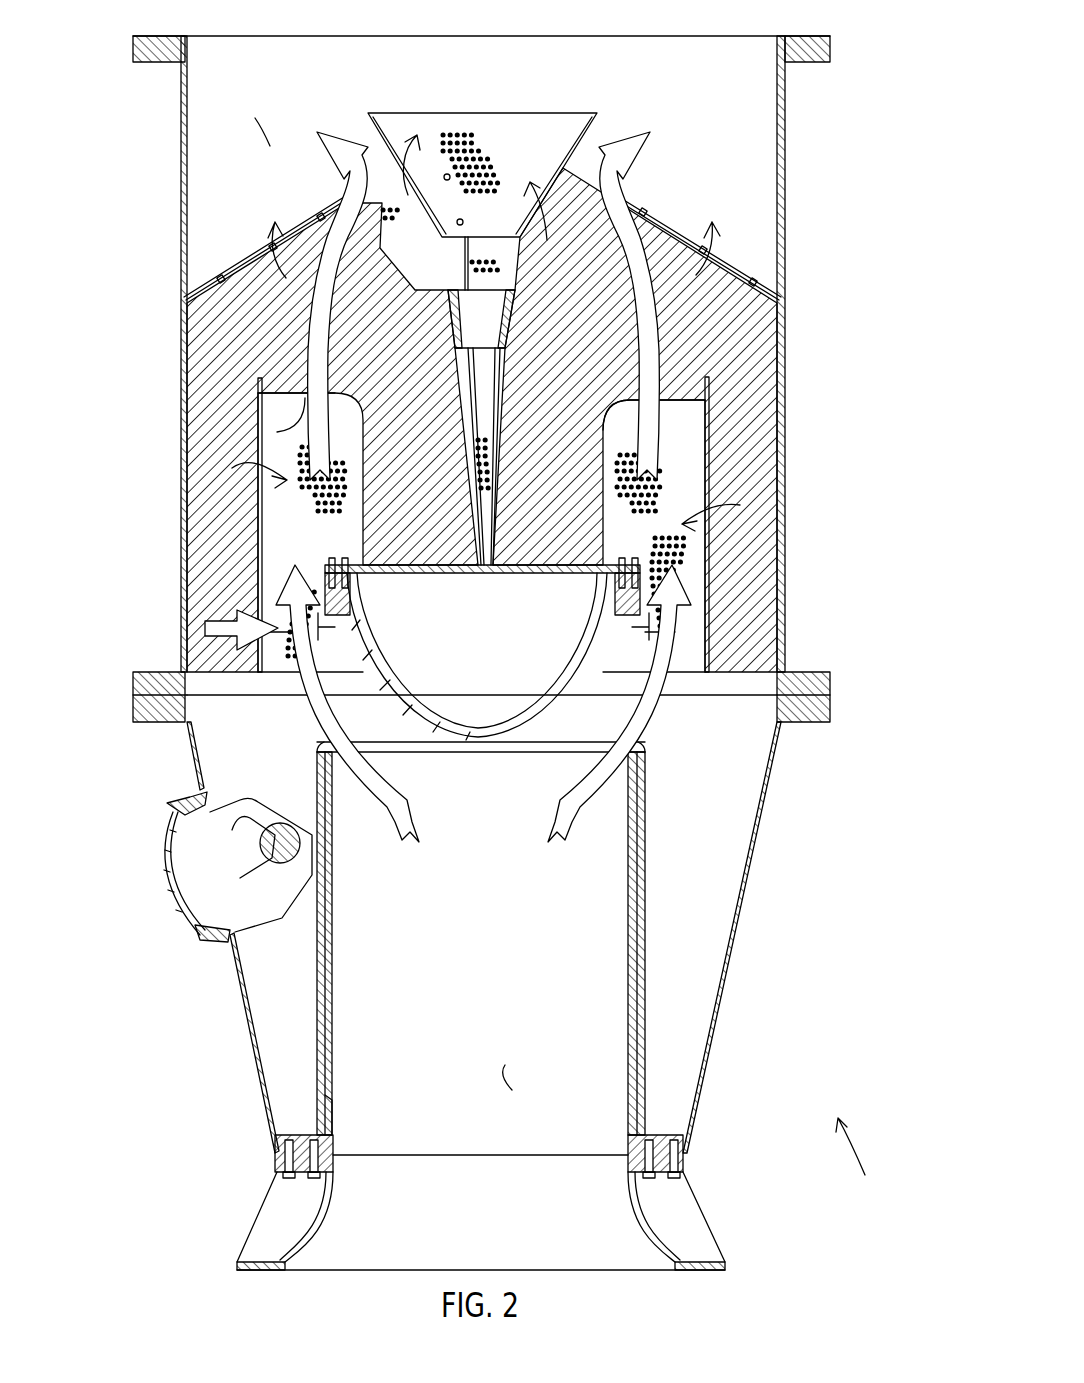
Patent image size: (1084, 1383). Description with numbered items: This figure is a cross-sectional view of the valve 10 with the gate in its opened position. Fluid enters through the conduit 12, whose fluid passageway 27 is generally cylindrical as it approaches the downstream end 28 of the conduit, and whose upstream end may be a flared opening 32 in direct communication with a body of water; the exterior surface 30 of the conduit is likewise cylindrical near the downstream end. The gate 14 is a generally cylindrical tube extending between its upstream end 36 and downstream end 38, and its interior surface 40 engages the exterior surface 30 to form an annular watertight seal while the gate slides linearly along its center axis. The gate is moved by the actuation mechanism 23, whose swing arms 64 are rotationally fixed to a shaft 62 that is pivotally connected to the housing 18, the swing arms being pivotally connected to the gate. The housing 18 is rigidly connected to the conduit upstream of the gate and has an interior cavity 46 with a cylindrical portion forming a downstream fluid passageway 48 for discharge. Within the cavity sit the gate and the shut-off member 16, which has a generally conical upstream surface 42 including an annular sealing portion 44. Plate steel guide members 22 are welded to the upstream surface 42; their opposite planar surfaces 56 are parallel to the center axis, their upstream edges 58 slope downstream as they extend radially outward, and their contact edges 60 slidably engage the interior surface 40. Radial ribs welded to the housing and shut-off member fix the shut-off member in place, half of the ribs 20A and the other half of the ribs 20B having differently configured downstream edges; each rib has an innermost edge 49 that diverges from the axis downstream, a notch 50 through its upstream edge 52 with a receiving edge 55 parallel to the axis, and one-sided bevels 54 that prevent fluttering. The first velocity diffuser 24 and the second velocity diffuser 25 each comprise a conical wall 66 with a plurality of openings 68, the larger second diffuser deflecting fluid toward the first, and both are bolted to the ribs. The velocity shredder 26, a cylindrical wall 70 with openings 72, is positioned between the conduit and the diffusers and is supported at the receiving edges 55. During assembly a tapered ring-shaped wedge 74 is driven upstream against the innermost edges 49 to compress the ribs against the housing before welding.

The valve 10 is at (858, 1157).
The conduit 12 is at (332, 1107).
The gate 14 is at (318, 972).
The shut-off member 16 is at (583, 790).
The housing 18 is at (185, 780).
The ribs 20A is at (352, 200).
The ribs 20B is at (225, 340).
The guide members 22 is at (300, 630).
The actuation mechanism 23 is at (243, 845).
The first velocity diffuser 24 is at (615, 130).
The second velocity diffuser 25 is at (262, 252).
The velocity shredder 26 is at (277, 500).
The fluid passageway 27 is at (505, 1065).
The downstream end 28 is at (567, 750).
The exterior surface 30 is at (325, 1100).
The flared opening 32 is at (612, 1242).
The upstream end 36 is at (643, 1097).
The downstream end 38 is at (345, 705).
The interior surface 40 is at (327, 792).
The upstream surface 42 is at (590, 690).
The annular sealing portion 44 is at (695, 522).
The interior cavity 46 is at (660, 420).
The downstream fluid passageway 48 is at (272, 142).
The innermost edge 49 is at (635, 268).
The notch 50 is at (310, 528).
The upstream edge 52 is at (290, 416).
The one-sided bevels 54 is at (297, 437).
The receiving edge 55 is at (293, 623).
The planar surfaces 56 is at (258, 630).
The upstream edge 58 is at (590, 660).
The contact edge 60 is at (288, 630).
The shaft 62 is at (273, 853).
The swing arms 64 is at (230, 928).
The wall 66 is at (670, 165).
The openings 68 is at (478, 145).
The cylindrical wall 70 is at (685, 457).
The openings 72 is at (280, 470).
The wedge 74 is at (475, 322).